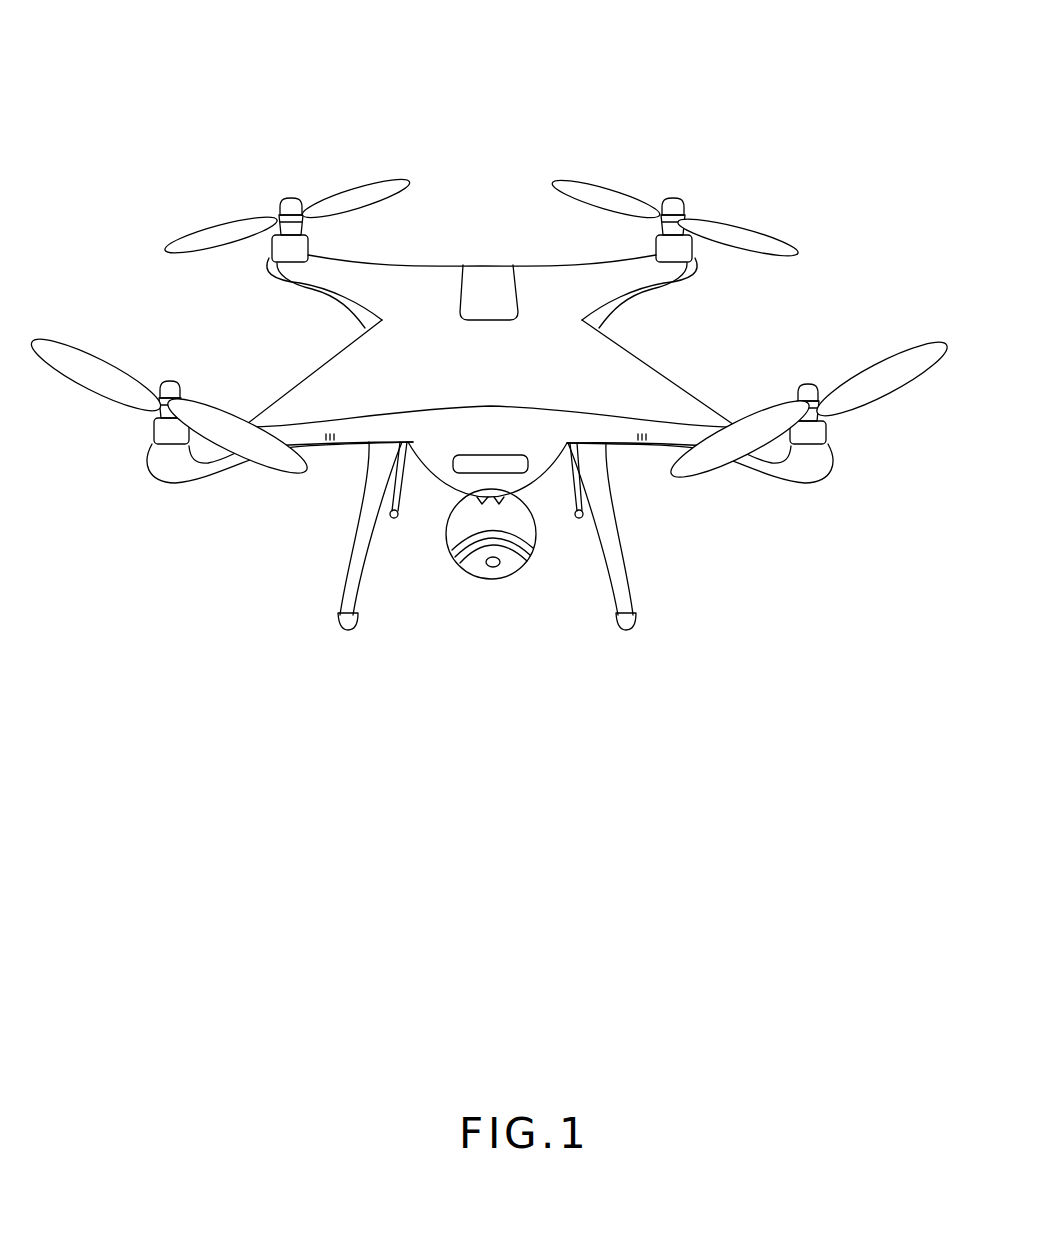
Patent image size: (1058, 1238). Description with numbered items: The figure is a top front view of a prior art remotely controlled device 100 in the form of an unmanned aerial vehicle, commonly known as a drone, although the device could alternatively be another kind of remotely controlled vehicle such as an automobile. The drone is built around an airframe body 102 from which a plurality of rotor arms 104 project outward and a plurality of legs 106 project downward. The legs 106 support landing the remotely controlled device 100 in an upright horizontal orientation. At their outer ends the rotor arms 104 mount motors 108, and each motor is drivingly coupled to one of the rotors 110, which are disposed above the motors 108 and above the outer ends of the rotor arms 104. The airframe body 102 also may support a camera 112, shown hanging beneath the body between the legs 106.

The remotely controlled device 100 is at (490, 324).
The airframe body 102 is at (513, 398).
The rotor arms 104 is at (332, 340).
The legs 106 is at (403, 503).
The motors 108 is at (310, 244).
The rotors 110 is at (282, 214).
The camera 112 is at (508, 560).